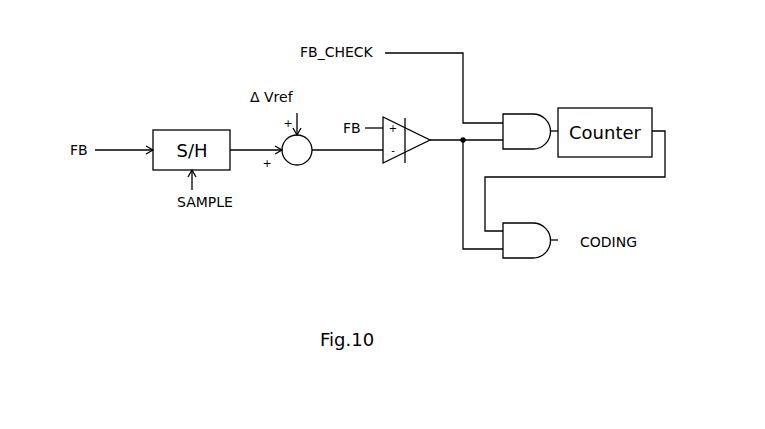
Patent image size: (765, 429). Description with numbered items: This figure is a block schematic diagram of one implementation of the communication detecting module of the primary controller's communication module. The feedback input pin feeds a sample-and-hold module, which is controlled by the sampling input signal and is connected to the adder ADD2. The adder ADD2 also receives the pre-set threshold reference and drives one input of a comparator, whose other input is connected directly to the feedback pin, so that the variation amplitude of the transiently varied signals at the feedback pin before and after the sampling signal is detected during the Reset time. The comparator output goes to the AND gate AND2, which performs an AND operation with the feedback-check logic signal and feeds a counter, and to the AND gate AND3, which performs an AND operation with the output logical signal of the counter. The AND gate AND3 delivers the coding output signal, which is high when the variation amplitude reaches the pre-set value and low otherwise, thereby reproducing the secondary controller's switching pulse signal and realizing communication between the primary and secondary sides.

The adder ADD2 is at (303, 159).
The AND gate AND2 is at (527, 122).
The AND gate AND3 is at (527, 231).